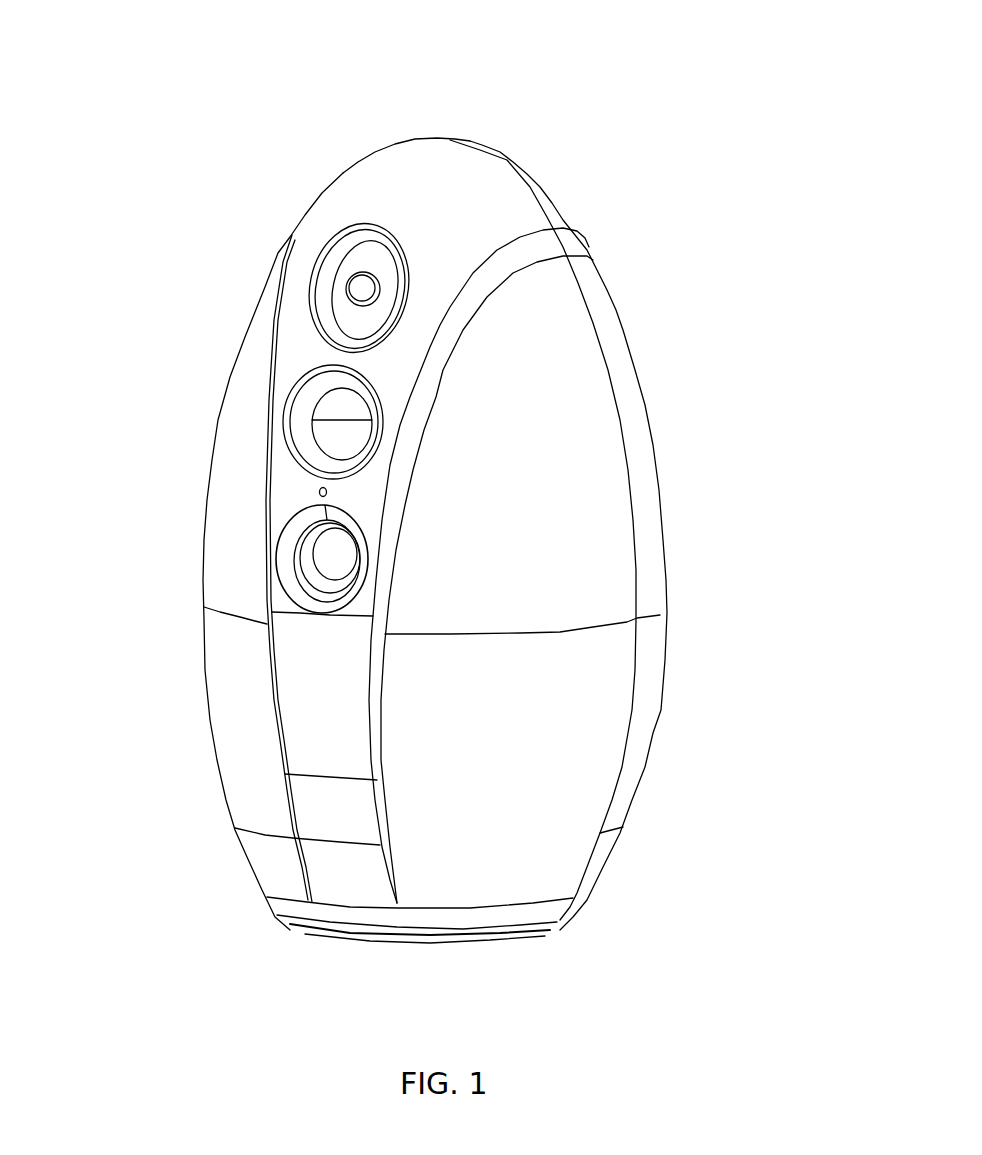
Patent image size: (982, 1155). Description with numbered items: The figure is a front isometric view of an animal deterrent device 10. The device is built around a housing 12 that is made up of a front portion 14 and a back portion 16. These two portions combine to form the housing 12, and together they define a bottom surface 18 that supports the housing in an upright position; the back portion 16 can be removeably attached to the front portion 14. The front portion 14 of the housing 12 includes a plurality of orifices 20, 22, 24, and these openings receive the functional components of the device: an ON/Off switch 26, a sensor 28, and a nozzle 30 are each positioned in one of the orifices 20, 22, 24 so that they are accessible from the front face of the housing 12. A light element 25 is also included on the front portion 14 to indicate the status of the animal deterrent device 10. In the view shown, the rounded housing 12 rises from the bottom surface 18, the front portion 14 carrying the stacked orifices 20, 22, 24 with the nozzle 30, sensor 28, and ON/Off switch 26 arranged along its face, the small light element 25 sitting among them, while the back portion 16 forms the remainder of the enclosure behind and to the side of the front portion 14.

The animal deterrent device 10 is at (702, 132).
The housing 12 is at (436, 138).
The front portion 14 is at (350, 177).
The back portion 16 is at (658, 543).
The bottom surface 18 is at (515, 942).
The orifice 20 is at (287, 596).
The orifice 22 is at (300, 422).
The orifice 24 is at (343, 280).
The light element 25 is at (315, 489).
The ON/Off switch 26 is at (320, 555).
The sensor 28 is at (330, 410).
The nozzle 30 is at (313, 311).